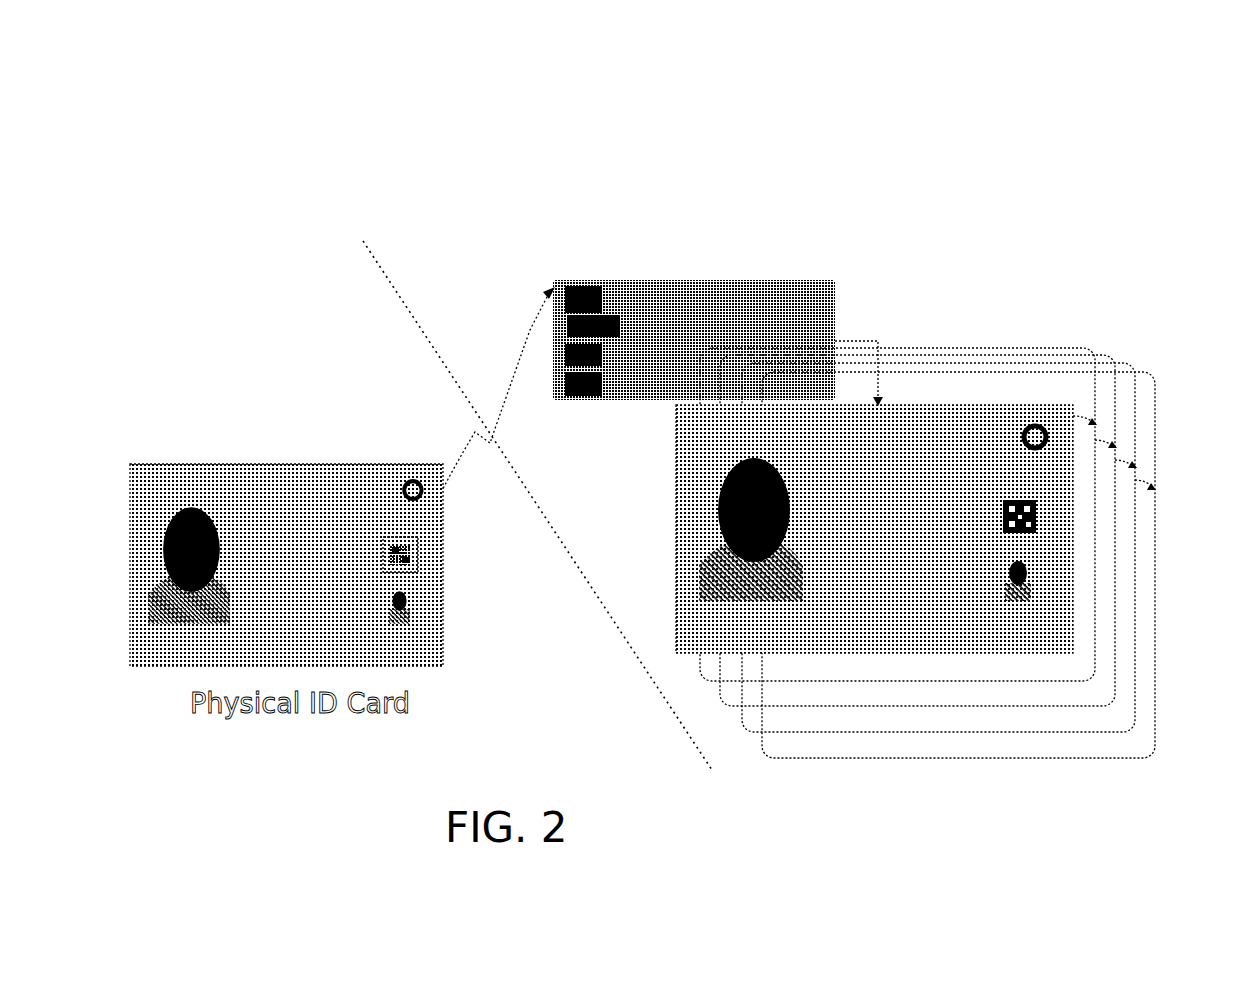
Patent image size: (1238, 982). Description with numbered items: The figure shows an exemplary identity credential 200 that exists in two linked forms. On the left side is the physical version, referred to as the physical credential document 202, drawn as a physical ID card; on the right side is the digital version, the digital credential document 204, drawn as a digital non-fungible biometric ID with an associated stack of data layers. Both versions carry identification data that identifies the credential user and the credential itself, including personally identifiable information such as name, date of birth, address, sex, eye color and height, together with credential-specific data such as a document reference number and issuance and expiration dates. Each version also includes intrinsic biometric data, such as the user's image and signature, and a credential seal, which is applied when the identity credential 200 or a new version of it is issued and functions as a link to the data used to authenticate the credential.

The identity credential 200 is at (1205, 268).
The physical credential document 202 is at (157, 666).
The digital credential document 204 is at (810, 800).